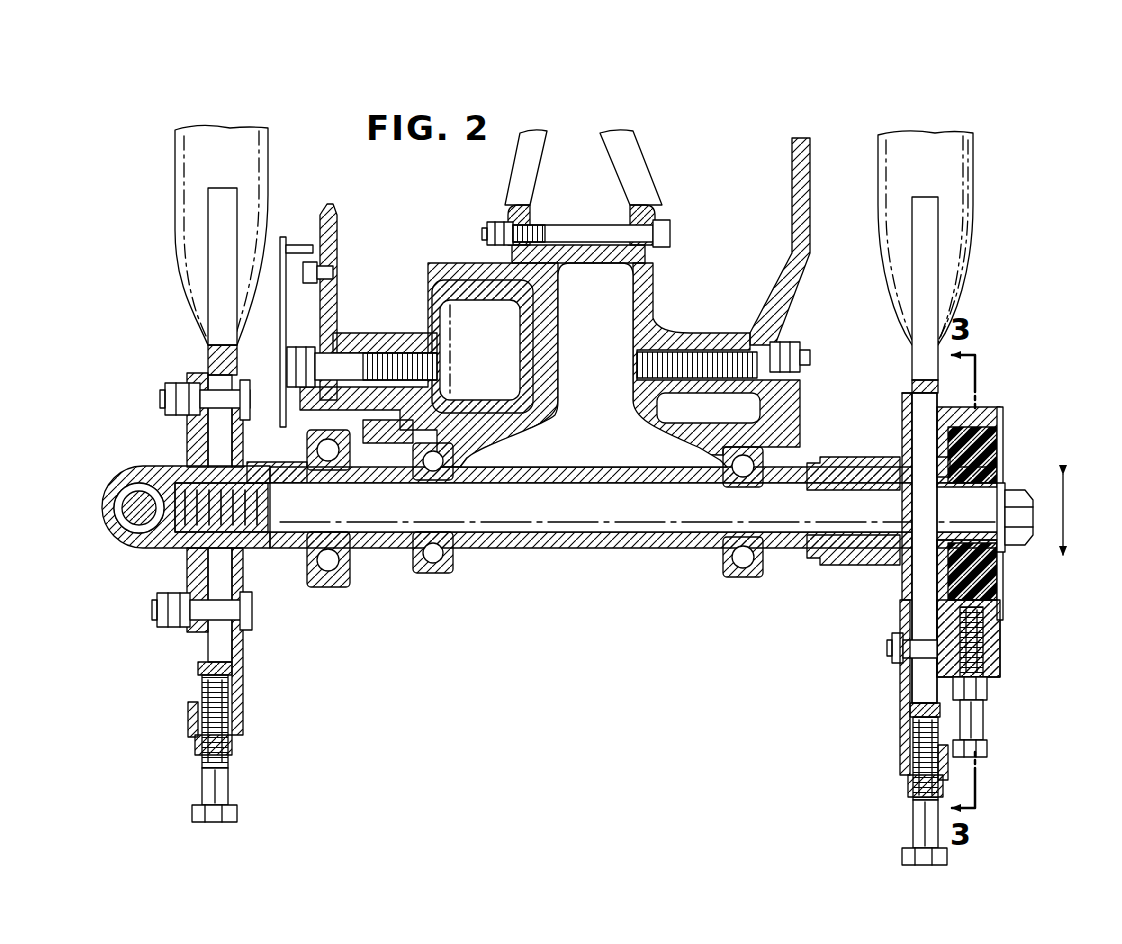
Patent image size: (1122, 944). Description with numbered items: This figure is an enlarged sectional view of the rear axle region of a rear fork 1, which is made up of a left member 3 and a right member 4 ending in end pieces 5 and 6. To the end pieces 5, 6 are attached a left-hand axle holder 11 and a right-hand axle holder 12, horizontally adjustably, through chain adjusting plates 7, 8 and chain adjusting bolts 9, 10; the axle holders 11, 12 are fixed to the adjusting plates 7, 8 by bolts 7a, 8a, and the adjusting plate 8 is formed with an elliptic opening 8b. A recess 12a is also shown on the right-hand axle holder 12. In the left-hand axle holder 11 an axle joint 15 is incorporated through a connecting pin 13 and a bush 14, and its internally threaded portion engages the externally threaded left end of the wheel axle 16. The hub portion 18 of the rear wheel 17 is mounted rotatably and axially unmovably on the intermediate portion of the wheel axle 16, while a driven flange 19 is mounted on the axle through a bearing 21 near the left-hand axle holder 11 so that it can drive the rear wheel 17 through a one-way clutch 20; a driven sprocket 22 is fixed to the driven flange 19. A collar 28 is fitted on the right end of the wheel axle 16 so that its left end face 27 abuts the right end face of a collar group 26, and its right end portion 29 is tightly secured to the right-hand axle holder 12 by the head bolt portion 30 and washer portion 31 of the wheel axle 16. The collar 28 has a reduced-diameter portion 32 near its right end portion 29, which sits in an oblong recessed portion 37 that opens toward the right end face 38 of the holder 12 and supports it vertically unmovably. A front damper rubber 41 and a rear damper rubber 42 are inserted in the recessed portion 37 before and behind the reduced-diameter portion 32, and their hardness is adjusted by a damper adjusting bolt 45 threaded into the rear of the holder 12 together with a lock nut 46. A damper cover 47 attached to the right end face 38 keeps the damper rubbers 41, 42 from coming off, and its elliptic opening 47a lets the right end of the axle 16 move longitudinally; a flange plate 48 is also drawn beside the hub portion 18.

The rear fork 1 is at (975, 146).
The left member 3 is at (186, 152).
The right member 4 is at (974, 181).
The end piece 5 is at (216, 290).
The end piece 6 is at (930, 246).
The chain adjusting plate 7 is at (238, 694).
The bolt 7a is at (250, 386).
The chain adjusting plate 8 is at (902, 738).
The bolt 8a is at (892, 660).
The elliptic opening 8b is at (904, 440).
The chain adjusting bolt 9 is at (216, 818).
The chain adjusting bolt 10 is at (920, 856).
The left-hand axle holder 11 is at (196, 569).
The right-hand axle holder 12 is at (996, 660).
The recess 12a is at (938, 468).
The connecting pin 13 is at (118, 507).
The bush 14 is at (106, 498).
The axle joint 15 is at (150, 460).
The wheel axle 16 is at (606, 520).
The rear wheel 17 is at (676, 163).
The hub portion 18 is at (654, 330).
The driven flange 19 is at (381, 342).
The one-way clutch 20 is at (476, 322).
The bearing 21 is at (362, 566).
The driven sprocket 22 is at (338, 235).
The collar group 26 is at (676, 551).
The left end face 27 is at (874, 565).
The collar 28 is at (924, 560).
The right end portion 29 is at (1006, 488).
The head bolt portion 30 is at (1012, 548).
The washer portion 31 is at (1004, 556).
The reduced-diameter portion 32 is at (986, 596).
The recessed portion 37 is at (995, 430).
The right end face 38 is at (1000, 638).
The front damper rubber 41 is at (1000, 460).
The rear damper rubber 42 is at (932, 600).
The damper adjusting bolt 45 is at (987, 750).
The lock nut 46 is at (977, 690).
The damper cover 47 is at (1000, 620).
The elliptic opening 47a is at (1004, 474).
The flange plate 48 is at (796, 208).